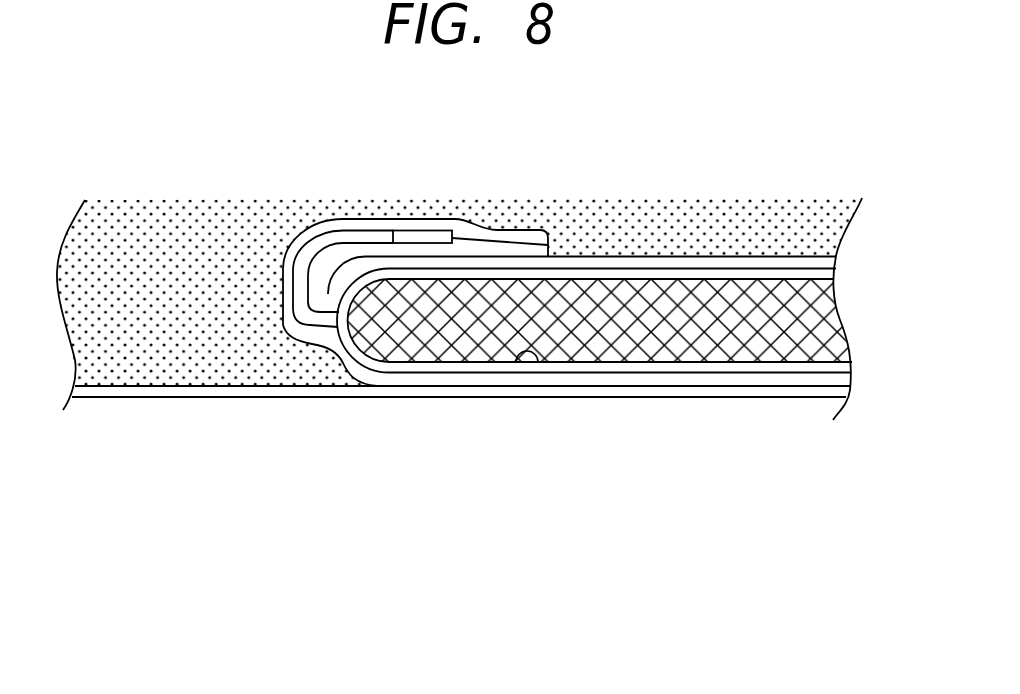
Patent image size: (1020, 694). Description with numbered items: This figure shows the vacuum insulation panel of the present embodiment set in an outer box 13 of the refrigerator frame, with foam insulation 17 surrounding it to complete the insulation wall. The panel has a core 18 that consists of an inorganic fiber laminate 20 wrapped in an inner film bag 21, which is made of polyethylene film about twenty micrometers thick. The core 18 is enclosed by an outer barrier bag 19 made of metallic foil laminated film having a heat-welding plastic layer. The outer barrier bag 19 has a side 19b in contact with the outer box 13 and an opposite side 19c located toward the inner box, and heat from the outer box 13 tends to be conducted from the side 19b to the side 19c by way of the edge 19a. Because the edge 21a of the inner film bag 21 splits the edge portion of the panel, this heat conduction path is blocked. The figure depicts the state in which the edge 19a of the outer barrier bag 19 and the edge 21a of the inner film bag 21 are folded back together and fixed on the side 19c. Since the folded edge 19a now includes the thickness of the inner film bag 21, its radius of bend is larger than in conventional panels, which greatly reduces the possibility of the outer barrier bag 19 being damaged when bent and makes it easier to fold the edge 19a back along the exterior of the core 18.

The outer box 13 is at (251, 392).
The foam insulation 17 is at (125, 362).
The core 18 is at (785, 348).
The outer barrier bag 19 is at (682, 262).
The edge 19a is at (518, 234).
The side 19b is at (673, 387).
The side 19c is at (792, 262).
The inorganic fiber laminate 20 is at (445, 350).
The inner film bag 21 is at (542, 360).
The edge 21a is at (414, 243).